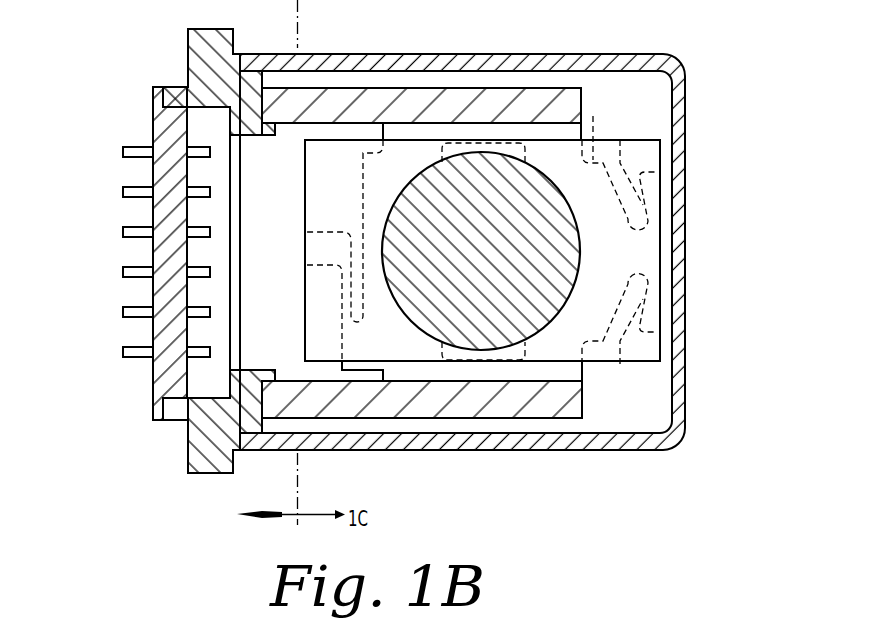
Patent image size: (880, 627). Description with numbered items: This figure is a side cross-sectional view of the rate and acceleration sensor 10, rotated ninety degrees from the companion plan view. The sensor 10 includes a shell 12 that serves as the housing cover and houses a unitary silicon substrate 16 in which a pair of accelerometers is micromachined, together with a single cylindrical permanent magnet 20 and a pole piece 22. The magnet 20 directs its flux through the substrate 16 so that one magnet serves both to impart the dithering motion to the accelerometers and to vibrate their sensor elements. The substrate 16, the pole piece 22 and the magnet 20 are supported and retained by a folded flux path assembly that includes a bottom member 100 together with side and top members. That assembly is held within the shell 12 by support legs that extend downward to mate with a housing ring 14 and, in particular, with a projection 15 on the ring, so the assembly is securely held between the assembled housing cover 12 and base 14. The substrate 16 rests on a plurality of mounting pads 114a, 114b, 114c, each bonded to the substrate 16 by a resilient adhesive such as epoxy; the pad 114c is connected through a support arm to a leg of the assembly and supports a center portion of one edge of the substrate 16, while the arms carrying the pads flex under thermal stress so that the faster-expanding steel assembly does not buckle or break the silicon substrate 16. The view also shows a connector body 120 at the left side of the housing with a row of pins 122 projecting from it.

The rate and acceleration sensor 10 is at (138, 101).
The shell 12 is at (388, 443).
The housing ring 14 is at (191, 52).
The projection 15 is at (263, 132).
The unitary substrate 16 is at (650, 158).
The magnet 20 is at (503, 175).
The pole piece 22 is at (394, 100).
The bottom member 100 is at (593, 116).
The mounting pad 114a is at (653, 337).
The mounting pad 114b is at (653, 172).
The mounting pad 114c is at (318, 248).
The connector body 120 is at (157, 372).
The connector pins 122 is at (125, 312).